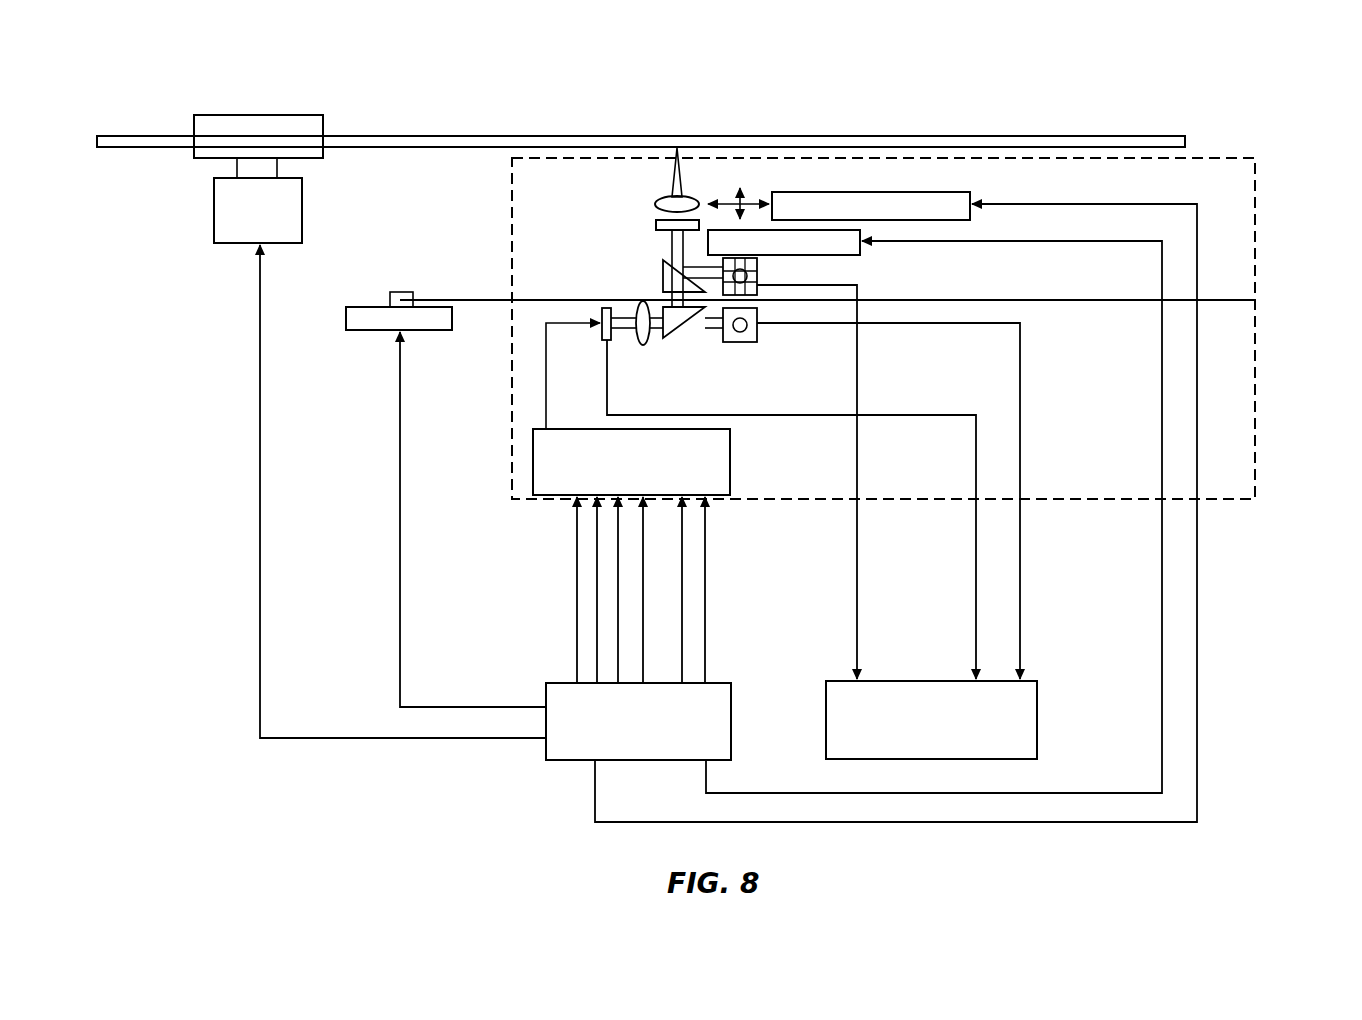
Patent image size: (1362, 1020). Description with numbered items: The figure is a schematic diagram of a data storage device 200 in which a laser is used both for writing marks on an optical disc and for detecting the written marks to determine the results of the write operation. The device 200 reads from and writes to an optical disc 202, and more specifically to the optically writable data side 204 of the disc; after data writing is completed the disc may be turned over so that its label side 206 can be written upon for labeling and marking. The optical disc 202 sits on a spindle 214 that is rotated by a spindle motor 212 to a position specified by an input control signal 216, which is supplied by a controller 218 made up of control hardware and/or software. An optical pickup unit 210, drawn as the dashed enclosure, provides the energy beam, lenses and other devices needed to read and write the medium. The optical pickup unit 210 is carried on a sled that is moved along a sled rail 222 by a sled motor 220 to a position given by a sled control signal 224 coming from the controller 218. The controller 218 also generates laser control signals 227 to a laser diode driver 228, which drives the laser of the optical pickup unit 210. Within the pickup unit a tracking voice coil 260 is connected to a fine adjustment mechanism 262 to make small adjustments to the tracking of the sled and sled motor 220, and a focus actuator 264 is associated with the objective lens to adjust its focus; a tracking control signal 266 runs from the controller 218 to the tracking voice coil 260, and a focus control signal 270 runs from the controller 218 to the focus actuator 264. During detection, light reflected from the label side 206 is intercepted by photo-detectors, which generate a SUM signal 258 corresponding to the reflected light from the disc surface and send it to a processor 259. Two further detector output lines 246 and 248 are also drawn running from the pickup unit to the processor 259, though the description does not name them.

The data storage device 200 is at (488, 104).
The optical disc 202 is at (92, 139).
The optically writable data side 204 is at (138, 135).
The label side 206 is at (172, 149).
The optical pickup unit 210 is at (1256, 201).
The spindle motor 212 is at (214, 226).
The spindle 214 is at (262, 115).
The input control signal 216 is at (259, 312).
The controller 218 is at (733, 713).
The sled motor 220 is at (362, 332).
The sled rail 222 is at (487, 302).
The sled control signal 224 is at (400, 448).
The laser control signals 227 is at (574, 606).
The laser diode driver 228 is at (733, 463).
The laser power monitor signal line 246 is at (972, 540).
The detector signal line 248 is at (1021, 578).
The SUM signal 258 is at (857, 568).
The processor 259 is at (1040, 723).
The tracking voice coil 260 is at (851, 191).
The fine adjustment mechanism 262 is at (754, 189).
The focus actuator 264 is at (862, 253).
The tracking control signal 266 is at (1065, 205).
The focus control signal 270 is at (1035, 243).